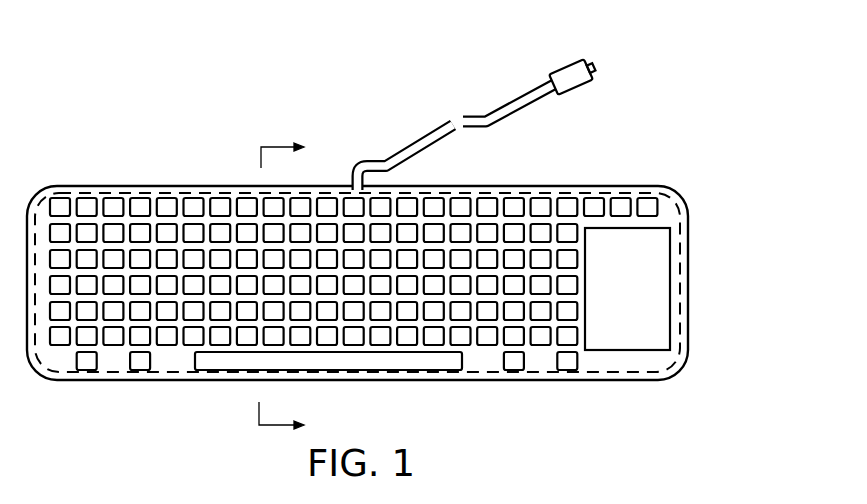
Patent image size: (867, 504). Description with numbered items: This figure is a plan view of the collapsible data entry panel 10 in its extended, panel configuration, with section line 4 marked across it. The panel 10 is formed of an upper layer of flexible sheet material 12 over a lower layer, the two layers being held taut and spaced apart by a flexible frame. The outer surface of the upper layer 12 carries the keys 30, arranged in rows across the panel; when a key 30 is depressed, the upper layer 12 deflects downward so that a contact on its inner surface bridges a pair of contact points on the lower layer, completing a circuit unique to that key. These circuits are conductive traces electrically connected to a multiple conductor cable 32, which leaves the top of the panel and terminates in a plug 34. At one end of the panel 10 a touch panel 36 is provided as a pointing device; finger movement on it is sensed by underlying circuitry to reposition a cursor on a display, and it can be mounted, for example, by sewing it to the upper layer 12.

The collapsible data entry panel 10 is at (638, 187).
The upper layer of flexible sheet material 12 is at (485, 380).
The keys 30 is at (140, 207).
The multiple conductor cable 32 is at (403, 152).
The plug 34 is at (567, 75).
The touch panel 36 is at (655, 295).
The section line 4- 4 is at (290, 287).